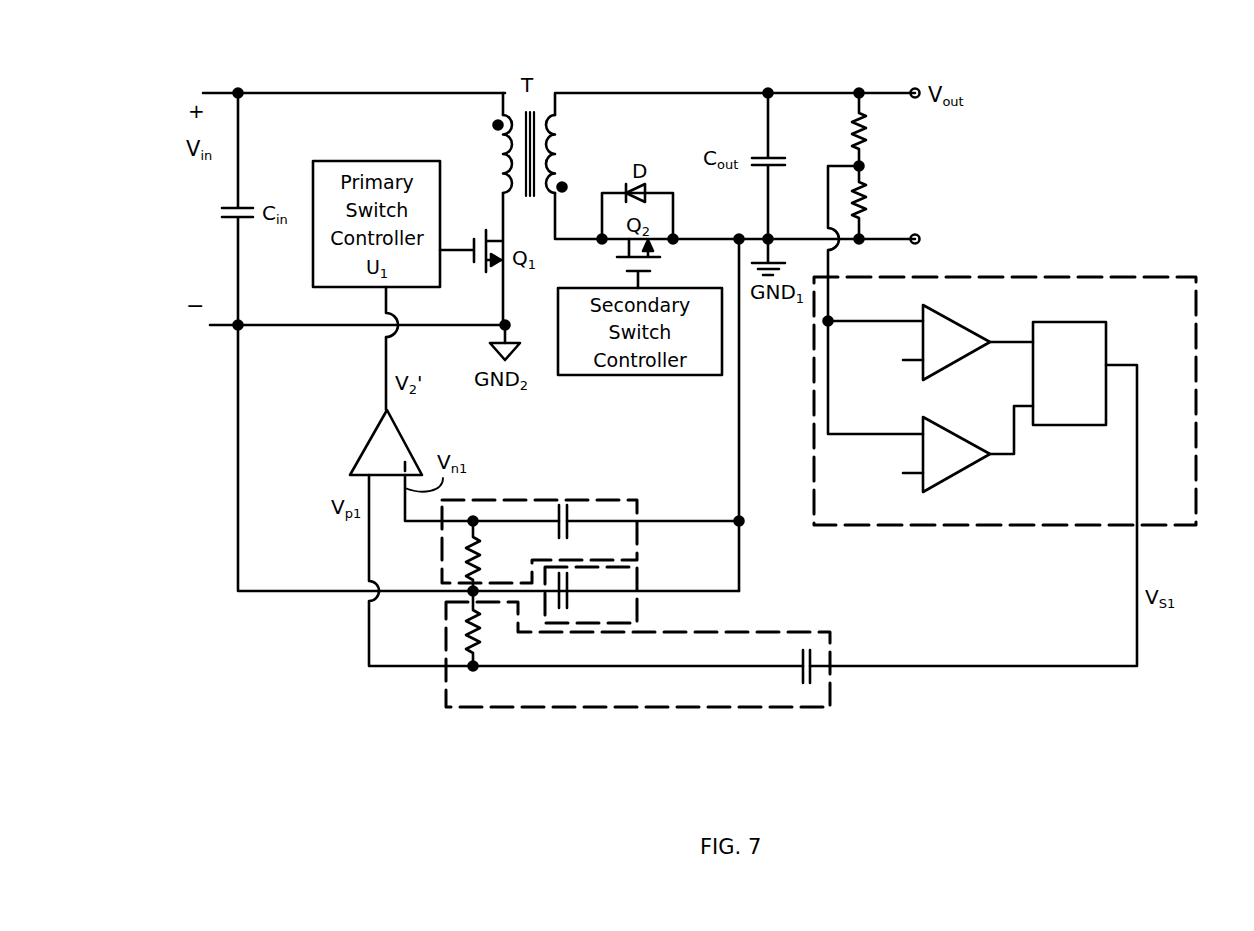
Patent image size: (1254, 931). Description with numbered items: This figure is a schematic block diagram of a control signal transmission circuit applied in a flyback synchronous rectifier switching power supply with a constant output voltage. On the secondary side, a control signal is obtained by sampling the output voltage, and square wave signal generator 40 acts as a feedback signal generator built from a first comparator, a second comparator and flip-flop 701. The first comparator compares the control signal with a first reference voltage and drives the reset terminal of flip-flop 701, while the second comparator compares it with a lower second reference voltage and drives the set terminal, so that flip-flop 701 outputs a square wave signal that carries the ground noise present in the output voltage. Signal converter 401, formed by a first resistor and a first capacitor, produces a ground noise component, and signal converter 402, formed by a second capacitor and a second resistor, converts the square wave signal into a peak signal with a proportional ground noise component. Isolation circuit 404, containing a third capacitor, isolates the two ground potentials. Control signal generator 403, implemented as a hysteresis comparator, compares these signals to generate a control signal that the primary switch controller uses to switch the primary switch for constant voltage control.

The square wave signal generator 40 is at (1030, 401).
The signal converter 401 is at (538, 708).
The signal converter 402 is at (560, 500).
The control signal generator 403 is at (366, 446).
The isolation circuit 404 is at (639, 578).
The flip-flop 701 is at (1085, 322).